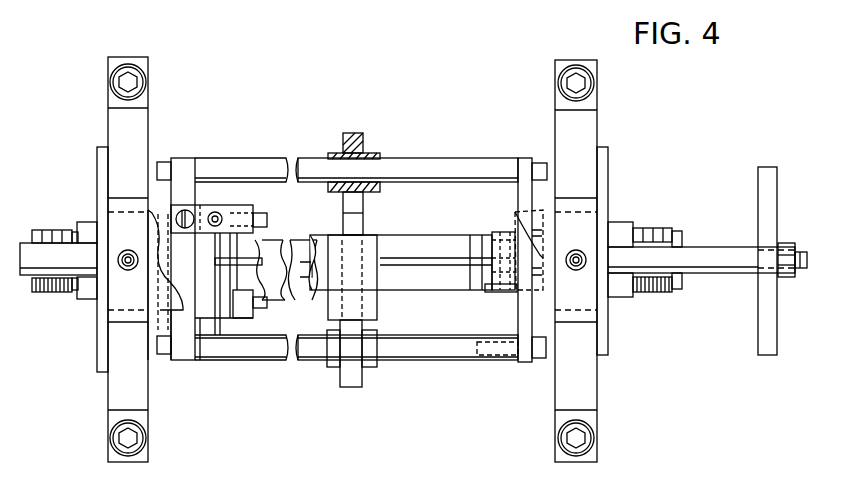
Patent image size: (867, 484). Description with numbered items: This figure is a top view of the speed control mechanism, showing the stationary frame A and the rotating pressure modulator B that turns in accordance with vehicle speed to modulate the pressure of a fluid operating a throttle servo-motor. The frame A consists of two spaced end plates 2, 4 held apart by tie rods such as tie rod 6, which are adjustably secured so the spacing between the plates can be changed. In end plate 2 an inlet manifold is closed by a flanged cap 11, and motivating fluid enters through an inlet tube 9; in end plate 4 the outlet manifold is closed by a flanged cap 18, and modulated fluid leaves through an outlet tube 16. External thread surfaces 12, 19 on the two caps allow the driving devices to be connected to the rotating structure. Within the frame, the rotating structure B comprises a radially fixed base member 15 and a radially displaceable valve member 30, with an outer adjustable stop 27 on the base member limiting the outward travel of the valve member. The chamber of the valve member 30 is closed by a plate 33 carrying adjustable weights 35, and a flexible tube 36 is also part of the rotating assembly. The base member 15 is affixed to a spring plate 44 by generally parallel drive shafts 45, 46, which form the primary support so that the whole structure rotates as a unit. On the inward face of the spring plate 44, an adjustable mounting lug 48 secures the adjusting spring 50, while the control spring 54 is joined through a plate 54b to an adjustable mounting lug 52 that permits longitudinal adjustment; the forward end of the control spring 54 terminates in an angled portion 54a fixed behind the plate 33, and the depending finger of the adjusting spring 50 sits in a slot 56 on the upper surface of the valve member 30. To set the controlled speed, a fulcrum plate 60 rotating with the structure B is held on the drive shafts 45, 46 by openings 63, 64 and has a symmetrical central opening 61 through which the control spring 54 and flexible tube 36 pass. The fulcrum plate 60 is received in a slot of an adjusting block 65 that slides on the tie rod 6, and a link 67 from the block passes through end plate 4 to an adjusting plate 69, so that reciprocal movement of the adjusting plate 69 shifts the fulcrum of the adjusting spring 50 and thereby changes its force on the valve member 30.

The stationary frame A is at (152, 66).
The rotating pressure modulator B is at (273, 148).
The end plate 2 is at (152, 118).
The end plate 4 is at (598, 120).
The tie rod 6 is at (98, 306).
The inlet tube 9 is at (28, 243).
The flanged cap 11 is at (97, 150).
The external thread surface 12 is at (52, 232).
The base member 15 is at (183, 160).
The outlet tube 16 is at (683, 247).
The flanged cap 18 is at (609, 158).
The external thread surface 19 is at (655, 228).
The outer adjustable stop 27 is at (210, 205).
The valve member 30 is at (200, 326).
The plate 33 is at (230, 320).
The adjustable weights 35 is at (248, 206).
The flexible tube 36 is at (279, 274).
The spring plate 44 is at (525, 158).
The drive shaft 45 is at (440, 160).
The drive shaft 46 is at (430, 360).
The adjustable mounting lug 48 is at (500, 232).
The adjusting spring 50 is at (256, 255).
The adjustable mounting lug 52 is at (487, 292).
The control spring 54 is at (270, 258).
The angled portion 54a is at (265, 300).
The plate 54b is at (478, 234).
The slot 56 is at (220, 320).
The fulcrum plate 60 is at (363, 128).
The central opening 61 is at (365, 216).
The opening 63 is at (382, 156).
The opening 64 is at (374, 362).
The adjusting block 65 is at (378, 316).
The link 67 is at (730, 247).
The adjusting plate 69 is at (767, 167).